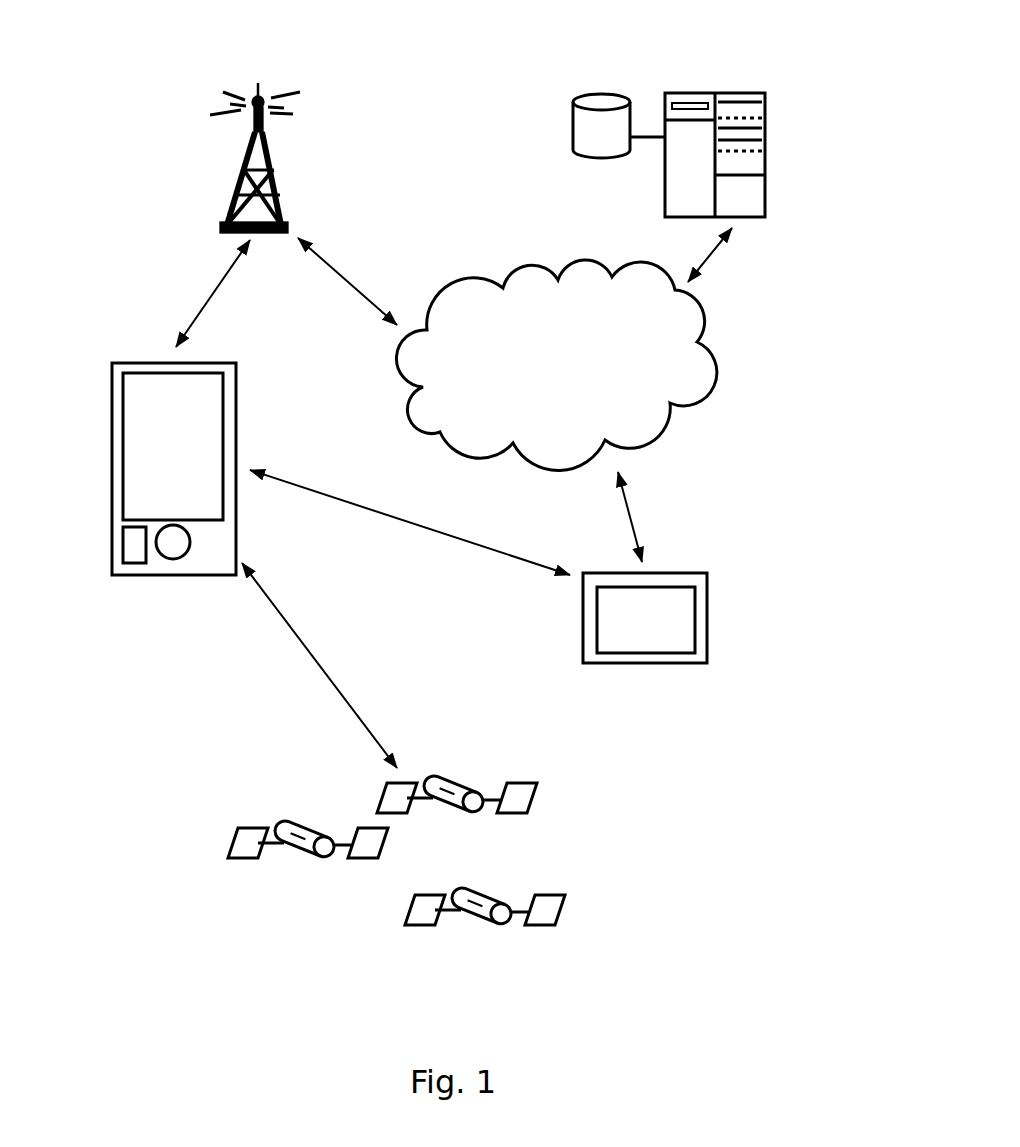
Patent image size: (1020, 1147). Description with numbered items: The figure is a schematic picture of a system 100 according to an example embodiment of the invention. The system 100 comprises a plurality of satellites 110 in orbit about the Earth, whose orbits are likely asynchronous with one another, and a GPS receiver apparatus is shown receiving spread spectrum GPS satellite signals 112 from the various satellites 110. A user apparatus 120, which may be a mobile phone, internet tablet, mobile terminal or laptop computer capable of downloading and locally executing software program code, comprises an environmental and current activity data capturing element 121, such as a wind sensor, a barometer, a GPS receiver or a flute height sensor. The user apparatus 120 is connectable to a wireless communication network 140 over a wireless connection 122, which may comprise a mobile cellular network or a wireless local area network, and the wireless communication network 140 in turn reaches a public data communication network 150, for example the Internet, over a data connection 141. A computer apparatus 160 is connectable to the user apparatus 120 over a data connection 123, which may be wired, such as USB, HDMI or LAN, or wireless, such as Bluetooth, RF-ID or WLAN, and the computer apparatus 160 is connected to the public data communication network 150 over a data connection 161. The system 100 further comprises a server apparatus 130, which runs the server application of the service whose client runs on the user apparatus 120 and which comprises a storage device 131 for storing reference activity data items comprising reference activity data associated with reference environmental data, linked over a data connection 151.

The system 100 is at (454, 41).
The satellites 110 is at (537, 800).
The global positioning system satellite signals 112 is at (318, 668).
The user apparatus 120 is at (236, 390).
The environmental and current activity data capturing element 121 is at (135, 563).
The wireless connection 122 is at (210, 295).
The data connection 123 is at (412, 522).
The server apparatus 130 is at (701, 93).
The storage device 131 is at (597, 160).
The wireless communication network 140 is at (248, 152).
The data connection 141 is at (345, 278).
The public data communication network 150 is at (690, 400).
The data connection 151 is at (710, 258).
The computer apparatus 160 is at (640, 663).
The data connection 161 is at (633, 530).